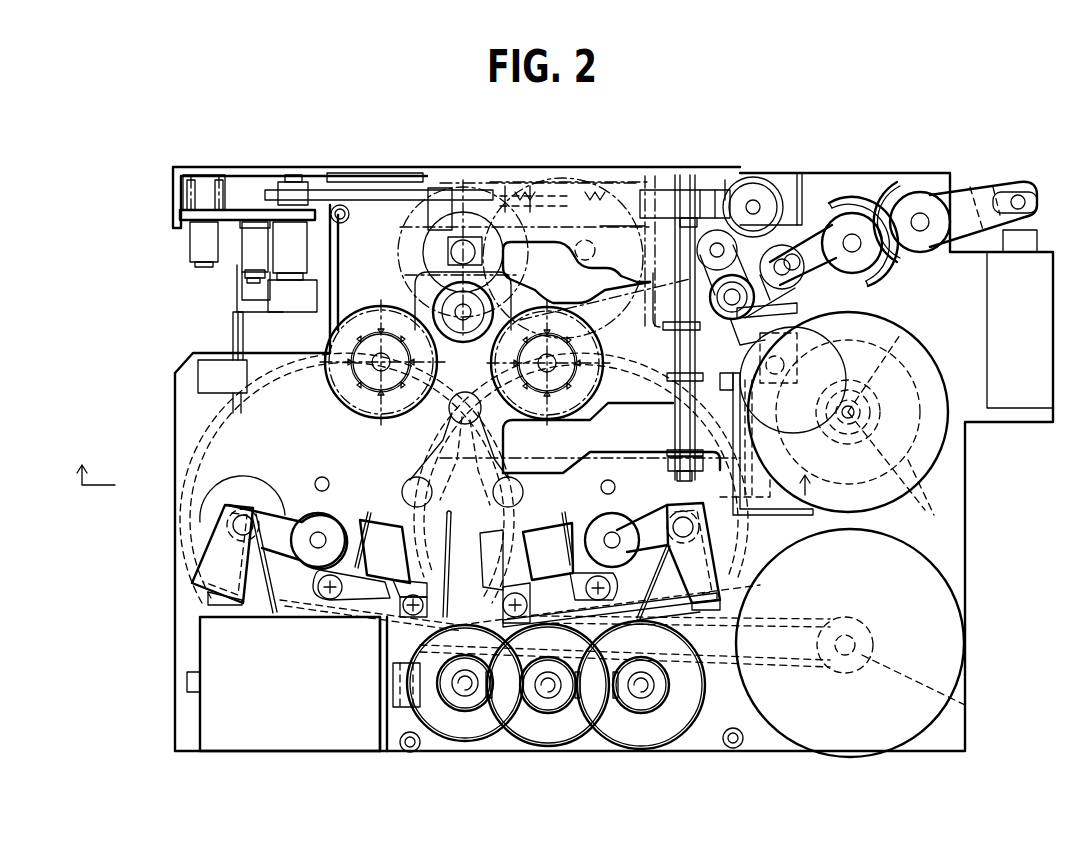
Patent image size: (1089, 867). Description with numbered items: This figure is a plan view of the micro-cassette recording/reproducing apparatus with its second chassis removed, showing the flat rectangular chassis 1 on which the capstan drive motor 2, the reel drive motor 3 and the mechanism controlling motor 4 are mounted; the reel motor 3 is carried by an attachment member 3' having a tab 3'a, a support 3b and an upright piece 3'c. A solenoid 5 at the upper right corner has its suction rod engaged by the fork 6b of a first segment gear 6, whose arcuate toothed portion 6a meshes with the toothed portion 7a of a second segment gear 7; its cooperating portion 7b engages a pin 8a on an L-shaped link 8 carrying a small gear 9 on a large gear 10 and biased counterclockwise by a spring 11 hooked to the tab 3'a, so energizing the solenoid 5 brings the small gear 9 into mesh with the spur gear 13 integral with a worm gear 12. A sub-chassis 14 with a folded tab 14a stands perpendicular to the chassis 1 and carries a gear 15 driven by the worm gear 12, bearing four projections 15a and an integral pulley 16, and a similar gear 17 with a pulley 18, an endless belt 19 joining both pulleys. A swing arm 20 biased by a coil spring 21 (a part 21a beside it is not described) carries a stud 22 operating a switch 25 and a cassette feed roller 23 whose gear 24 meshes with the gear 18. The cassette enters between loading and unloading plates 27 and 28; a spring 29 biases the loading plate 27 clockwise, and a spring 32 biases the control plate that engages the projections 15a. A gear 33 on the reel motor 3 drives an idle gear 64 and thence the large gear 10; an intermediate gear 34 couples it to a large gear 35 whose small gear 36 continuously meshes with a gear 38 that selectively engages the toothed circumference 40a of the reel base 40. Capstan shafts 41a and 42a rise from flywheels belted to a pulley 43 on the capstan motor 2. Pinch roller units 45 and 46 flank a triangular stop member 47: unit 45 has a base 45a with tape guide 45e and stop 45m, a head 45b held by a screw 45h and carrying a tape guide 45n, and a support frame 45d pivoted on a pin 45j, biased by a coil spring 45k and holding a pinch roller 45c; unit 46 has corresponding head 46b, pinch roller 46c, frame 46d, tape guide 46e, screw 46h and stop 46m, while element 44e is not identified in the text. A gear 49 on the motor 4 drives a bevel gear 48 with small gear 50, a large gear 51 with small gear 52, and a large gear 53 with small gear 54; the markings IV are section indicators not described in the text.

The chassis 1 is at (975, 496).
The capstan drive motor 2 is at (950, 622).
The reel drive motor 3 is at (876, 412).
The attachment member 3' is at (927, 501).
The tab 3'a is at (793, 380).
The upright piece 3'c is at (732, 420).
The support 3b is at (660, 465).
The mechanism controlling motor 4 is at (270, 725).
The solenoid 5 is at (1040, 333).
The first segment gear 6 is at (950, 240).
The arcuate toothed portion 6a is at (895, 190).
The cooperating fork 6b is at (1025, 180).
The second segment gear 7 is at (850, 270).
The arcuate toothed portion 7a is at (862, 200).
The cooperating portion 7b is at (855, 260).
The link 8 is at (755, 300).
The pin 8a is at (773, 274).
The small gear 9 is at (752, 200).
The large gear 10 is at (742, 262).
The spring 11 is at (760, 312).
The worm gear 12 is at (760, 185).
The spur gear 13 is at (770, 200).
The sub-chassis 14 is at (578, 176).
The folded tab 14a is at (177, 222).
The gear 15 is at (655, 188).
The projections 15a is at (728, 182).
The pulley 16 is at (704, 188).
The gear 17 is at (372, 188).
The pulley 18 is at (340, 195).
The endless belt 19 is at (403, 178).
The swing arm 20 is at (232, 182).
The coil spring 21 is at (190, 200).
The bracket flange 21a is at (182, 215).
The stud 22 is at (248, 256).
The cassette casing feed roller 23 is at (268, 305).
The gear 24 is at (290, 182).
The switch 25 is at (230, 337).
The loading plate 27 is at (445, 408).
The unloading plate 28 is at (607, 270).
The spring 29 is at (512, 190).
The spring 32 is at (540, 190).
The gear 33 is at (914, 370).
The intermediate gear 34 is at (672, 176).
The large gear 35 is at (425, 238).
The small gear 36 is at (440, 262).
The gear 38 is at (432, 300).
The reel base 40 is at (350, 378).
The toothed circumference 40a is at (325, 368).
The capstan shaft 41a is at (607, 475).
The capstan shaft 42a is at (328, 478).
The pulley 43 is at (975, 700).
The spring rod 44e is at (448, 535).
The pinch roller unit 45 is at (740, 550).
The base 45a is at (672, 625).
The reproducing magnetic head 45b is at (572, 520).
The pinch roller 45c is at (620, 520).
The support frame 45d is at (725, 578).
The tape guide 45e is at (515, 540).
The screw 45h is at (503, 603).
The pin 45j is at (700, 528).
The coil spring 45k is at (612, 585).
The stop 45m is at (740, 596).
The tape guide 45n is at (586, 487).
The pinch roller unit 46 is at (283, 505).
The reproducing magnetic head 46b is at (380, 510).
The pinch roller 46c is at (372, 515).
The support frame 46d is at (232, 528).
The tape guide 46e is at (290, 615).
The screw 46h is at (318, 590).
The stop 46m is at (220, 605).
The triangular stop member 47 is at (440, 462).
The bevel gear 48 is at (485, 720).
The gear 49 is at (428, 720).
The small gear 50 is at (468, 695).
The large gear 51 is at (578, 720).
The small gear 52 is at (546, 700).
The large gear 53 is at (672, 725).
The small gear 54 is at (644, 705).
The idle gear 64 is at (905, 330).
The section line IV is at (443, 467).